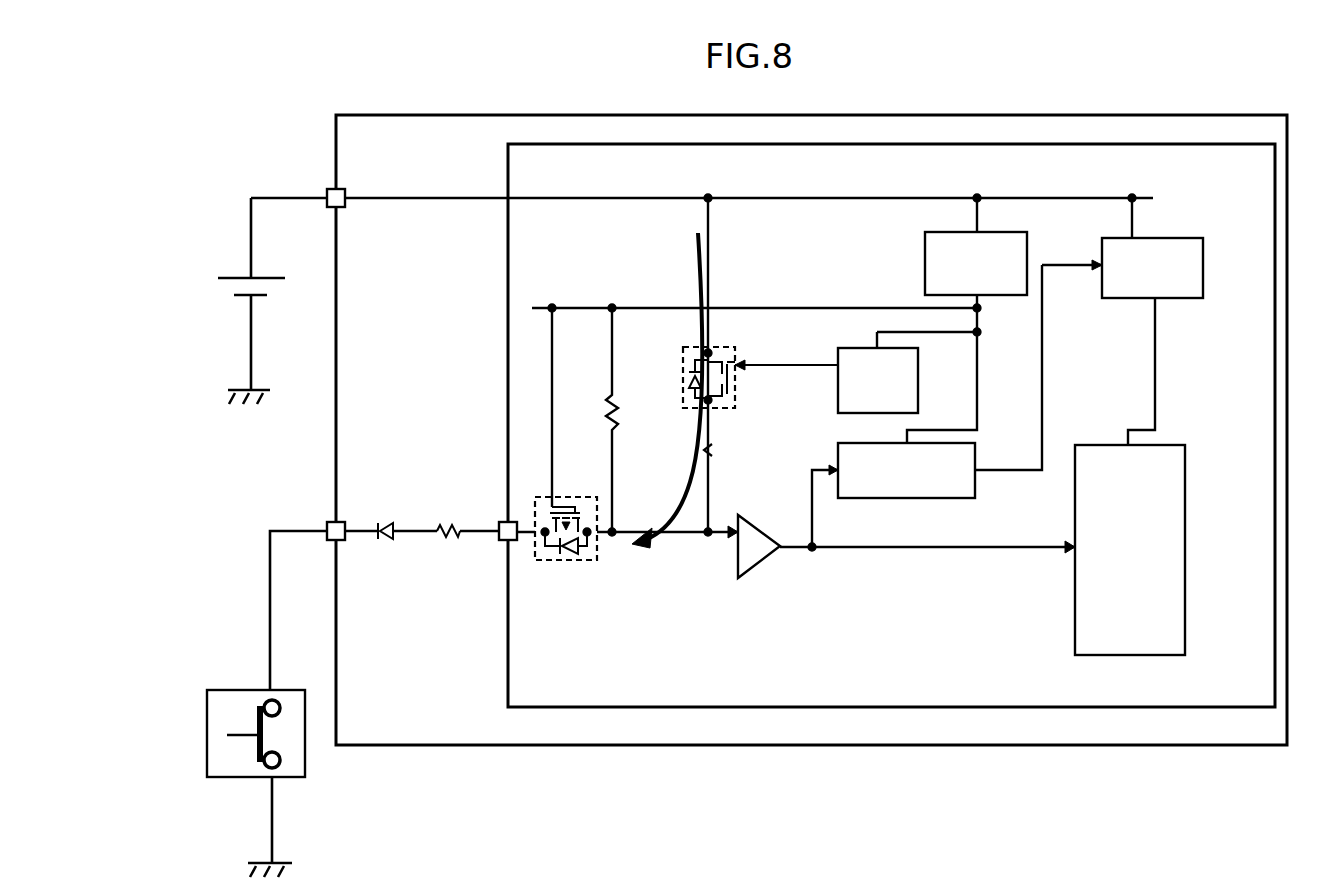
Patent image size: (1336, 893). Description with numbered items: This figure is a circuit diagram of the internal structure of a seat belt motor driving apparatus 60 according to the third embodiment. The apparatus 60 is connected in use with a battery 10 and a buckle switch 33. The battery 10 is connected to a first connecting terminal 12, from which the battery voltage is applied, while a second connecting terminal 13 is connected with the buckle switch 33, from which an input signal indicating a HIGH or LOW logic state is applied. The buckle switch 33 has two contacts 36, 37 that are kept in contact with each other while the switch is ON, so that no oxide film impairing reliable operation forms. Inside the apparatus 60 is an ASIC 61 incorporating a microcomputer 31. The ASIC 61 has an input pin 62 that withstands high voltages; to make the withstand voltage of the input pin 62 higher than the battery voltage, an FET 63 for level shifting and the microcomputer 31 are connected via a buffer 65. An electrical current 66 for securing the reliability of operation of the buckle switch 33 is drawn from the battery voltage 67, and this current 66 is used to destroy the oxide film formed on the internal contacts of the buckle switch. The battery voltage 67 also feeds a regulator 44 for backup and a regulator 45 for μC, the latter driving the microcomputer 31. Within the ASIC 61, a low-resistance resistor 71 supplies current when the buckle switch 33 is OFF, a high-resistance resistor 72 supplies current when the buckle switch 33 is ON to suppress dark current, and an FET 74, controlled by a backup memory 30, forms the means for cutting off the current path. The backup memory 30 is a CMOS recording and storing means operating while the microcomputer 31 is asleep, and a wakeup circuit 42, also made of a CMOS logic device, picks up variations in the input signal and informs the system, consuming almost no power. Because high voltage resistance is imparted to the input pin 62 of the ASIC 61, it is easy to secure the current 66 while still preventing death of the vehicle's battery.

The battery 10 is at (275, 292).
The first connecting terminal 12 is at (344, 208).
The second connecting terminal 13 is at (344, 541).
The backup memory 30 is at (838, 395).
The microcomputer 31 is at (1185, 552).
The buckle switch 33 is at (259, 753).
The contact 36 is at (275, 700).
The contact 37 is at (258, 700).
The wakeup circuit 42 is at (975, 490).
The regulator for backup 44 is at (1027, 248).
The regulator for μC 45 is at (1203, 268).
The motor driving apparatus 60 is at (1220, 745).
The ASIC 61 is at (508, 660).
The input pin 62 is at (506, 522).
The FET for level shifting 63 is at (563, 562).
The buffer 65 is at (757, 570).
The electrical current 66 is at (668, 548).
The battery voltage 67 is at (620, 197).
The resistor 71 is at (716, 455).
The resistor 72 is at (612, 400).
The FET 74 is at (700, 347).